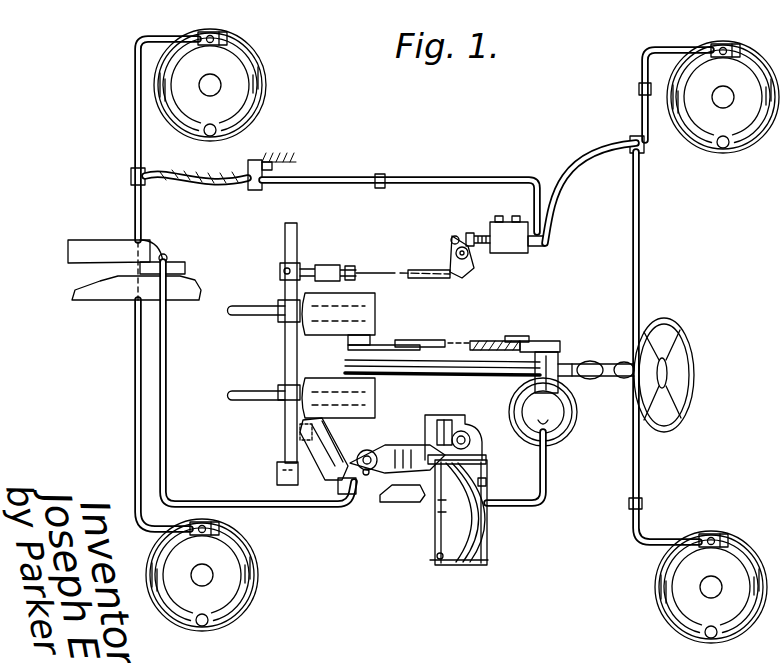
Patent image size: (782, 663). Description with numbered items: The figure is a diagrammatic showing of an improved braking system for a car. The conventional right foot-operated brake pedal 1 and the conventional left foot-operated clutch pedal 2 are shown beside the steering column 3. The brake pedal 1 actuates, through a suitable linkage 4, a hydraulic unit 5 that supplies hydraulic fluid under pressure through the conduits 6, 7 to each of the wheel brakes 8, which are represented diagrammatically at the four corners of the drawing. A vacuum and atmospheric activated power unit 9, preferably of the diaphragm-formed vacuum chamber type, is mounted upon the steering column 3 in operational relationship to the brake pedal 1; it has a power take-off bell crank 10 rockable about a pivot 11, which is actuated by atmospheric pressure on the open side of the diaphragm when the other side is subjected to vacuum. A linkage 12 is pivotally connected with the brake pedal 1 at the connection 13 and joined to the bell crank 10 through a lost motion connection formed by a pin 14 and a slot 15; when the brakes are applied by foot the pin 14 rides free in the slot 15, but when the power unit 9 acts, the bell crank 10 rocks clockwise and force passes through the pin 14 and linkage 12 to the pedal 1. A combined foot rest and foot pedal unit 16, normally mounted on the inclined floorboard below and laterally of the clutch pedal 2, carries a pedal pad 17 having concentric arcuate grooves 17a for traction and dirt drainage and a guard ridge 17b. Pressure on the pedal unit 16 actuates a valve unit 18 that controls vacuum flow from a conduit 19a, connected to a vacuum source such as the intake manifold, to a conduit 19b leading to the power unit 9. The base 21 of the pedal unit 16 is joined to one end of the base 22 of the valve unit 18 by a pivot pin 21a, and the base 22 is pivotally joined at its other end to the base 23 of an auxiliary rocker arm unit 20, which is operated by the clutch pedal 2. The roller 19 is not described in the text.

The brake pedal 1 is at (360, 304).
The clutch pedal 2 is at (360, 385).
The steering column 3 is at (492, 378).
The linkage 4 is at (428, 270).
The hydraulic unit 5 is at (512, 248).
The conduit 6 is at (510, 178).
The conduit 7 is at (582, 158).
The wheel brakes 8 is at (232, 95).
The power unit 9 is at (570, 425).
The bell crank 10 is at (565, 358).
The pivot 11 is at (560, 345).
The linkage 12 is at (440, 341).
The pivotal connection 13 is at (382, 342).
The pin 14 is at (513, 337).
The slot 15 is at (540, 342).
The foot rest and foot pedal unit 16 is at (461, 505).
The pedal pad 17 is at (474, 545).
The arcuate grooves 17a is at (486, 482).
The guard ridge 17b is at (480, 462).
The valve unit 18 is at (362, 496).
The roller 19 is at (366, 458).
The conduit 19a is at (322, 507).
The conduit 19b is at (522, 506).
The auxiliary rocker arm unit 20 is at (305, 437).
The base 21 is at (437, 560).
The pivot pin 21a is at (430, 442).
The base 22 is at (396, 503).
The base 23 is at (300, 432).